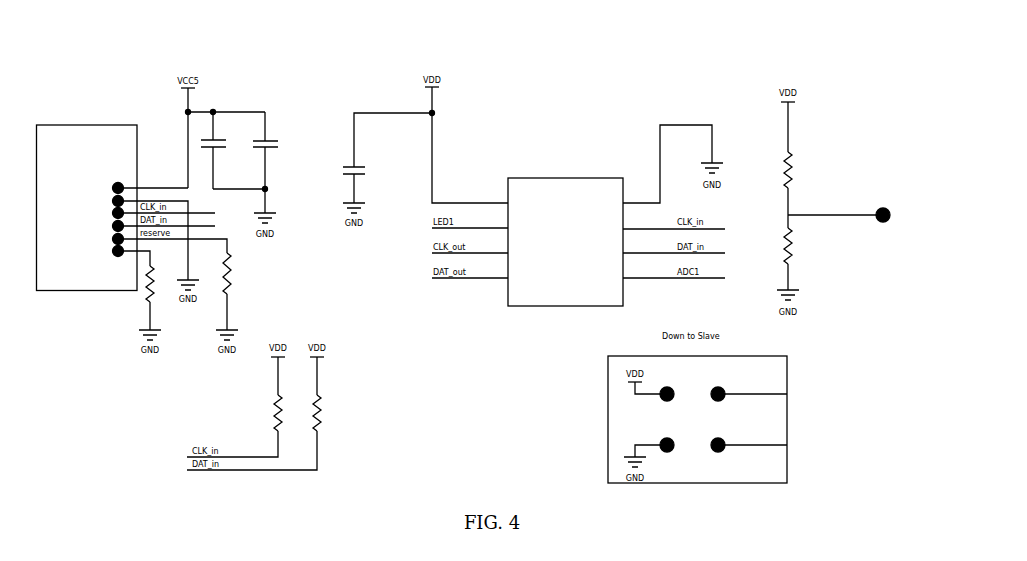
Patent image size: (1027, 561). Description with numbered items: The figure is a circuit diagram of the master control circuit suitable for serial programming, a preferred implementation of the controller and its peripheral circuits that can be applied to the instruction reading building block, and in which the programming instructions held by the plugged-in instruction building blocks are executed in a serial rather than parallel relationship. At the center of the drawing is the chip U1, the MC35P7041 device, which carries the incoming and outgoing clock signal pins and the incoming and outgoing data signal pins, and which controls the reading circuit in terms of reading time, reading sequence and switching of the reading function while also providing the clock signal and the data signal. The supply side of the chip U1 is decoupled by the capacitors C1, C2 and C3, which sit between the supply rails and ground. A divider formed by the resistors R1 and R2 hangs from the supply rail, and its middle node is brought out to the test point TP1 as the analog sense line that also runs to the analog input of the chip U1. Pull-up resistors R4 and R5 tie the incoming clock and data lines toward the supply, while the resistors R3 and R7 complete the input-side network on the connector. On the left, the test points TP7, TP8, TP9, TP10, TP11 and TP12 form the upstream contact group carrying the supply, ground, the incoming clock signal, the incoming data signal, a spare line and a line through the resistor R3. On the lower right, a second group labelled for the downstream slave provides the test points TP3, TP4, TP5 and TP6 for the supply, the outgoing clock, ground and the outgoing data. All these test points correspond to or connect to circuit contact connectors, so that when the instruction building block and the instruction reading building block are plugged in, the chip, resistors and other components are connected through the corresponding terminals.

The capacitor 10uF/16V C1 is at (228, 150).
The capacitor 0.1uF/16V C2 is at (287, 138).
The capacitor 0.1uF/16V C3 is at (376, 184).
The resistor 30K R1 is at (795, 183).
The resistor 3.3K R2 is at (796, 252).
The resistor 3.3K R3 is at (158, 298).
The pull-up resistor 2.2K R4 is at (243, 426).
The pull-up resistor 2.2K R5 is at (263, 432).
The resistor 30K/NC R7 is at (241, 291).
The microcontroller MC35P7041 U1 is at (566, 243).
The test point TP1 is at (853, 213).
The test point TP3 is at (656, 386).
The test point TP4 is at (743, 386).
The test point TP5 is at (654, 440).
The test point TP6 is at (743, 437).
The test point TP7 is at (137, 188).
The test point TP8 is at (137, 238).
The test point TP9 is at (151, 213).
The test point TP10 is at (150, 226).
The test point TP11 is at (156, 244).
The test point TP12 is at (117, 256).